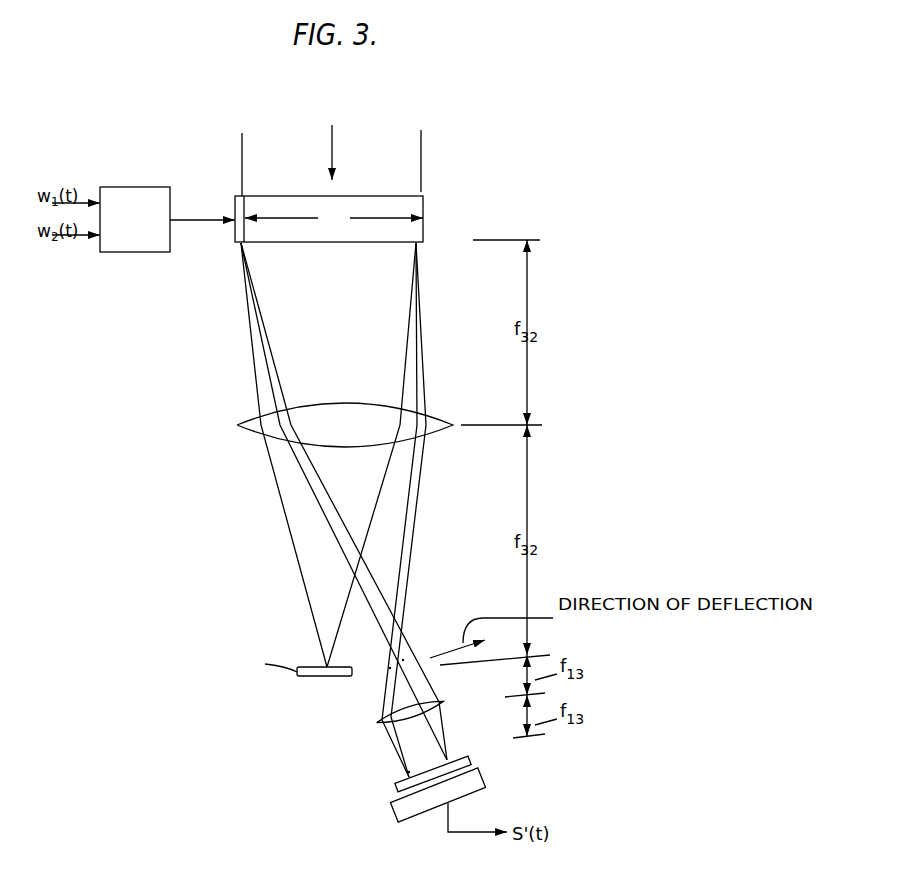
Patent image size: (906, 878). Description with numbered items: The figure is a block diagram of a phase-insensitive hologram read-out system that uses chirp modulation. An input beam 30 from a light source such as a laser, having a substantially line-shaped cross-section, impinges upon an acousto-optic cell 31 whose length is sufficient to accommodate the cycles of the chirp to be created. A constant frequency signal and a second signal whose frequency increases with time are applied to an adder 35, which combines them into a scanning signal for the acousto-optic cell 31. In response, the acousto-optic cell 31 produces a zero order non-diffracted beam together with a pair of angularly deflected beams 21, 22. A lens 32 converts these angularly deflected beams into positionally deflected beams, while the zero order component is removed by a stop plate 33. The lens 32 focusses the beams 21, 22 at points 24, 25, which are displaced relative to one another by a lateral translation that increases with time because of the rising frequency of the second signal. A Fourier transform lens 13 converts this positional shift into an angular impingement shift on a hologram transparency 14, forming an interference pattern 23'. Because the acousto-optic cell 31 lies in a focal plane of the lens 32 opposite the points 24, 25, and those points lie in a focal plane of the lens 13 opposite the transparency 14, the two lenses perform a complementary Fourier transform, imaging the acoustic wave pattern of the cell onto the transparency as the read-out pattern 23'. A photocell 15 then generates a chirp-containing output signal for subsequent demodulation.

The Fourier transform lens 13 is at (445, 703).
The hologram transparency 14 is at (466, 762).
The photocell 15 is at (488, 778).
The angularly deflected beam 21 is at (367, 605).
The angularly deflected beam 22 is at (389, 623).
The interference pattern 23' is at (376, 777).
The focal point 24 is at (390, 668).
The focal point 25 is at (403, 660).
The input beam 30 is at (403, 168).
The acousto-optic cell 31 is at (424, 203).
The lens 32 is at (443, 420).
The stop plate 33 is at (308, 677).
The adder 35 is at (148, 187).